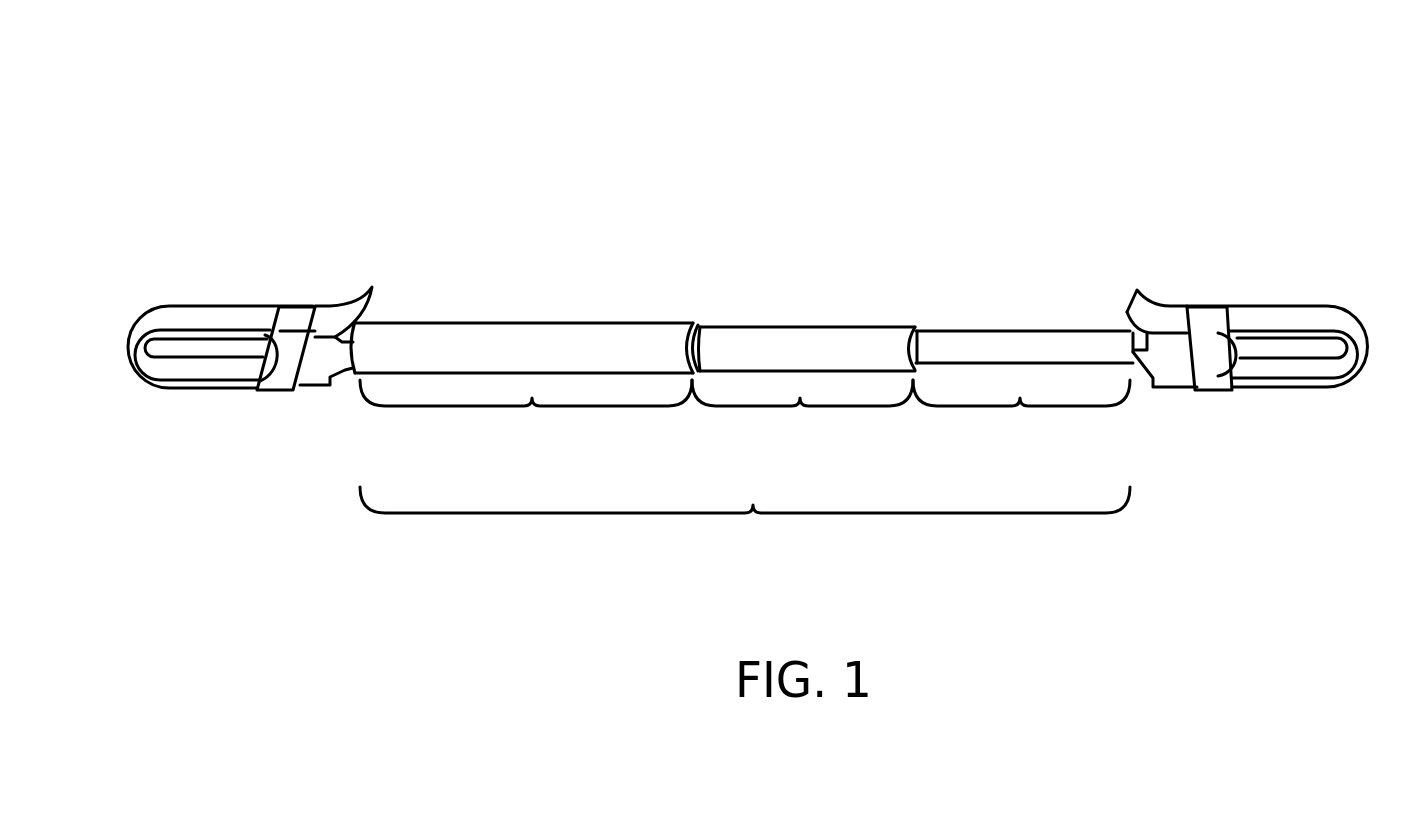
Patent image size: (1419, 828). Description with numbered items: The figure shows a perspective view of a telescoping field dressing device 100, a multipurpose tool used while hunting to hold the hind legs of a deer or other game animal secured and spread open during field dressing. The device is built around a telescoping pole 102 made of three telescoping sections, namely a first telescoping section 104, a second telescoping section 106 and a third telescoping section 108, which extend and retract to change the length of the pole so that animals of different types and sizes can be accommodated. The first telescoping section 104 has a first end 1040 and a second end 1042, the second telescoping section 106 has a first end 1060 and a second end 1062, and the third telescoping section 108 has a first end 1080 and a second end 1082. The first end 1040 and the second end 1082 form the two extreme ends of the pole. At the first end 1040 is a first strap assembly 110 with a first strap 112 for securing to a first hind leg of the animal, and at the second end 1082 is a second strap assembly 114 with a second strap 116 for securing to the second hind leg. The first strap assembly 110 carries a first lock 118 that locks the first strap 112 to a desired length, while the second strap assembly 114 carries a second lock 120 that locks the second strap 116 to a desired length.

The telescoping field dressing device 100 is at (378, 140).
The telescoping pole 102 is at (753, 505).
The first telescoping section 104 is at (532, 398).
The second telescoping section 106 is at (800, 398).
The third telescoping section 108 is at (1020, 398).
The first end of the first telescoping section 1040 is at (353, 368).
The second end of the first telescoping section 1042 is at (694, 323).
The first end of the second telescoping section 1060 is at (703, 325).
The second end of the second telescoping section 1062 is at (912, 327).
The first end of the third telescoping section 1080 is at (925, 330).
The second end of the third telescoping section 1082 is at (1143, 370).
The first strap assembly 110 is at (280, 358).
The first strap 112 is at (183, 318).
The second strap assembly 114 is at (1200, 367).
The second strap 116 is at (1320, 320).
The first lock 118 is at (293, 318).
The second lock 120 is at (1210, 318).